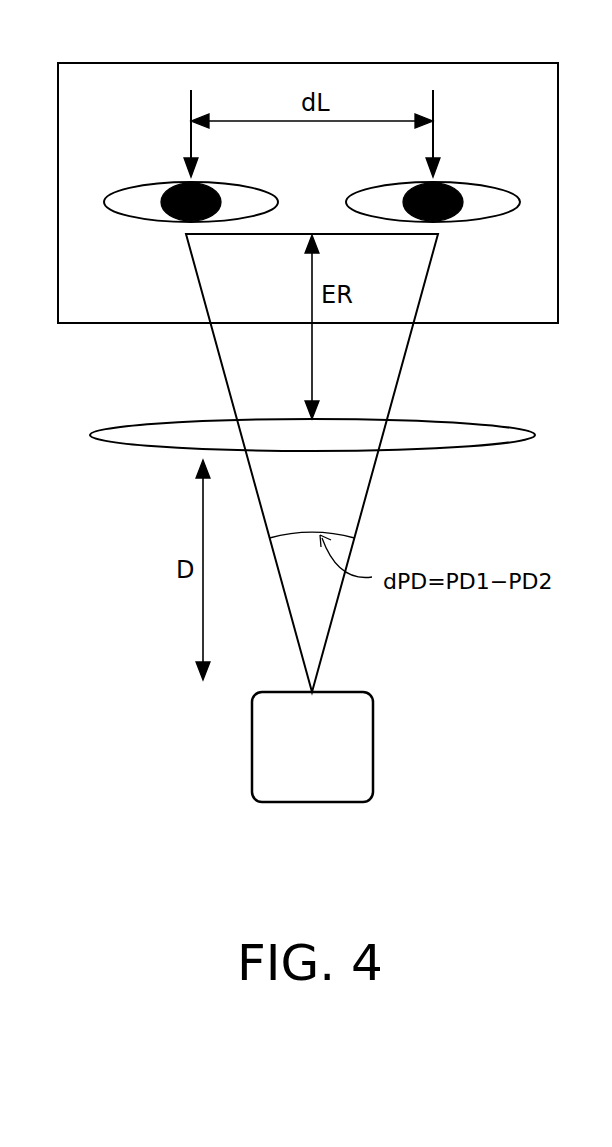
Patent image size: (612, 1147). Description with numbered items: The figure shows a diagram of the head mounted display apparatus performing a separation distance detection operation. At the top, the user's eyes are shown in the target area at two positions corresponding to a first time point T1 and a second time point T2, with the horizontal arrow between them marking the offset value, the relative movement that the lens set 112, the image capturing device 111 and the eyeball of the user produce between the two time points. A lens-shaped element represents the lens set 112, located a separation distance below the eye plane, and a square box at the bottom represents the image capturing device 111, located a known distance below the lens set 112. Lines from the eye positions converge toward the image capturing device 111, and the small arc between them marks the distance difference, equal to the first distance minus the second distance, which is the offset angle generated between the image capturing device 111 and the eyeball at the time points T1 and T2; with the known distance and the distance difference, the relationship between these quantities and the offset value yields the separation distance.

The image capturing device 111 is at (375, 745).
The lens set 112 is at (485, 422).
The first time point T1 is at (191, 107).
The second time point T2 is at (433, 107).